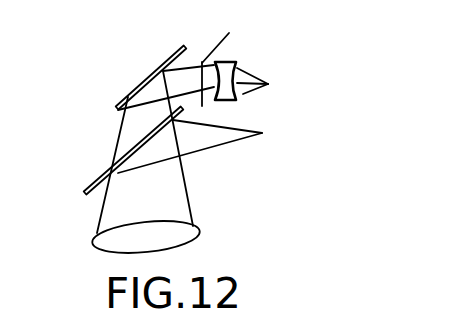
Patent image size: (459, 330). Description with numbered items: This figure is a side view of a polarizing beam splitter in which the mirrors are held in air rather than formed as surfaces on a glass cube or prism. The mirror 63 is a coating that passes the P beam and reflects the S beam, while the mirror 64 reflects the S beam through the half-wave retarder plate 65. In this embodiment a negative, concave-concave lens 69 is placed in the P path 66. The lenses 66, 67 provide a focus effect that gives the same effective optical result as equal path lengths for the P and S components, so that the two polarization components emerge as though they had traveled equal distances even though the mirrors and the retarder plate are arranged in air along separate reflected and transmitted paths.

The mirror 63 is at (98, 177).
The mirror 64 is at (148, 81).
The half-wave retarder plate 65 is at (238, 53).
The P path 66 is at (243, 94).
The lens 67 is at (232, 125).
The negative lens 69 is at (237, 65).